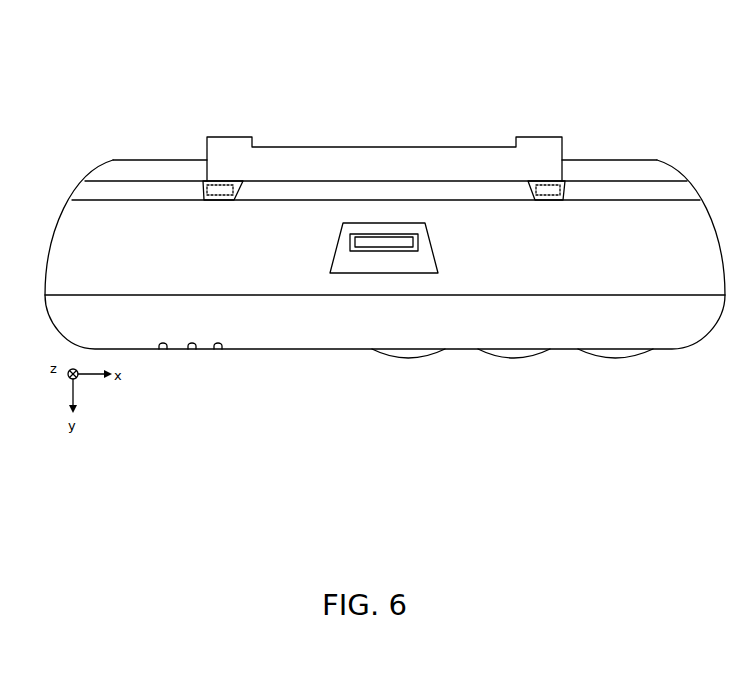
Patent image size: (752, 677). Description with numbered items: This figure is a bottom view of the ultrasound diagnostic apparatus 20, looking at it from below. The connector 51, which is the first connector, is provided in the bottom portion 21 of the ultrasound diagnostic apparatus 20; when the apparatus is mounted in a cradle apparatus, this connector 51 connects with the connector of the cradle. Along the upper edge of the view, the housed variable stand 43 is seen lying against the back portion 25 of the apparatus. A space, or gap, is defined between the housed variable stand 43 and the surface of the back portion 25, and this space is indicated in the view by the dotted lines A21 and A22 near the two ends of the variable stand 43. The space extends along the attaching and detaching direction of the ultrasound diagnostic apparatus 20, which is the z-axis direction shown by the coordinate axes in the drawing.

The ultrasound diagnostic apparatus 20 is at (389, 78).
The bottom portion 21 is at (262, 277).
The back portion 25 is at (127, 200).
The variable stand 43 is at (350, 147).
The dotted line A21 is at (203, 190).
The dotted line A22 is at (570, 189).
The connector 51 is at (386, 252).